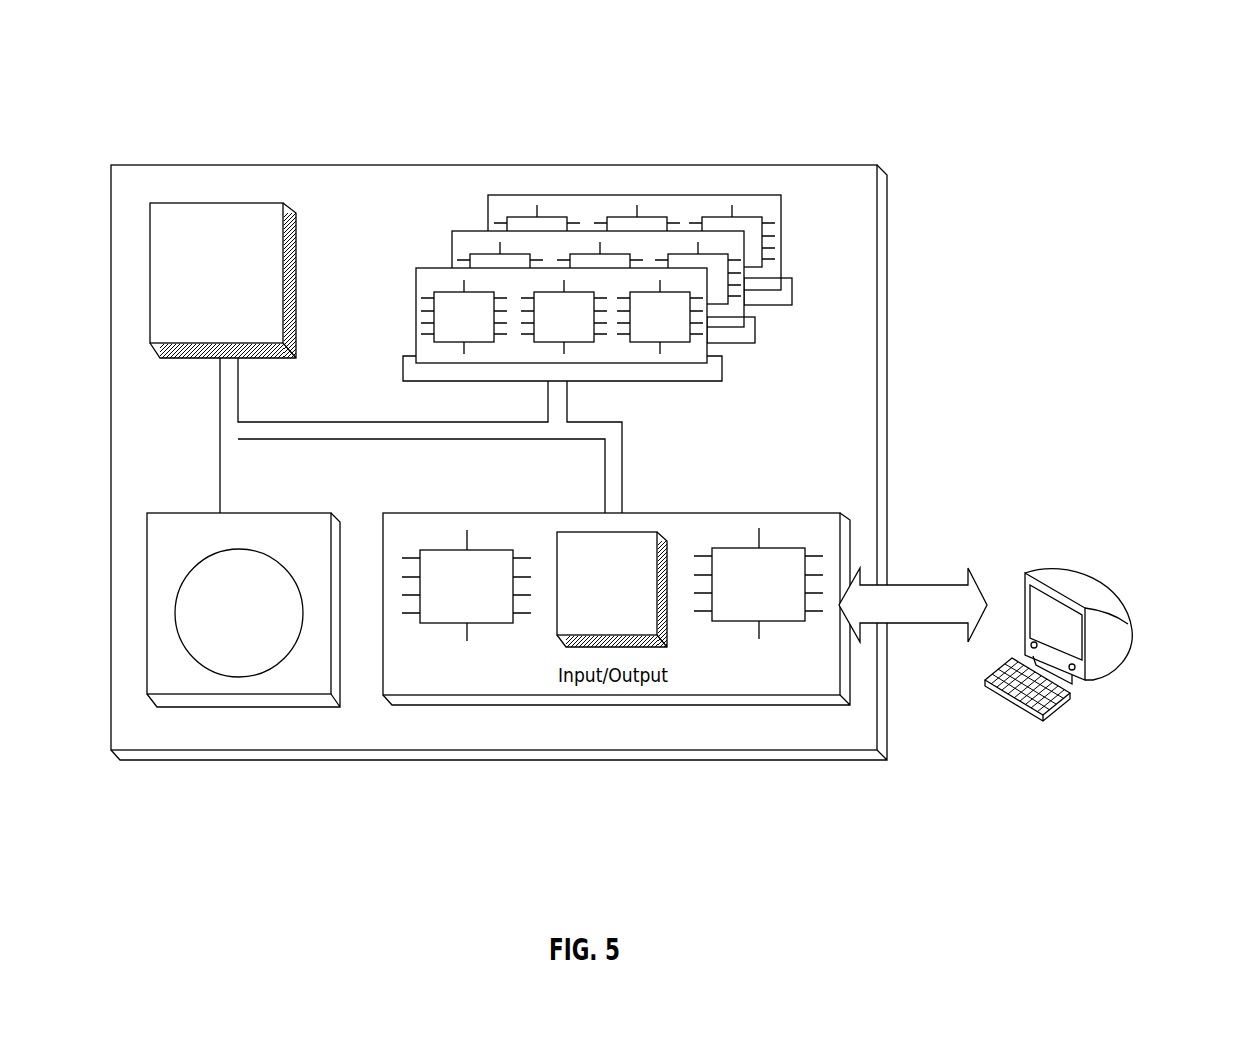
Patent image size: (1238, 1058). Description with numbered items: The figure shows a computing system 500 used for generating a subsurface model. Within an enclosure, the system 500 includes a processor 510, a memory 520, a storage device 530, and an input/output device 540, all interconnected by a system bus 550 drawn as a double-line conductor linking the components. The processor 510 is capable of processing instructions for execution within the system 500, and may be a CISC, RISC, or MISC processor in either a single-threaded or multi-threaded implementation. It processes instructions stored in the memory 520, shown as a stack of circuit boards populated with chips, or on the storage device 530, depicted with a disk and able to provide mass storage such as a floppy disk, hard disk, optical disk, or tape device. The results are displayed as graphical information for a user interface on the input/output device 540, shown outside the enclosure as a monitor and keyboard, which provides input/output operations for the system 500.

The system 500 is at (133, 76).
The processor 510 is at (266, 331).
The memory 520 is at (776, 320).
The storage device 530 is at (321, 688).
The input/output device 540 is at (1025, 573).
The system bus 550 is at (380, 432).